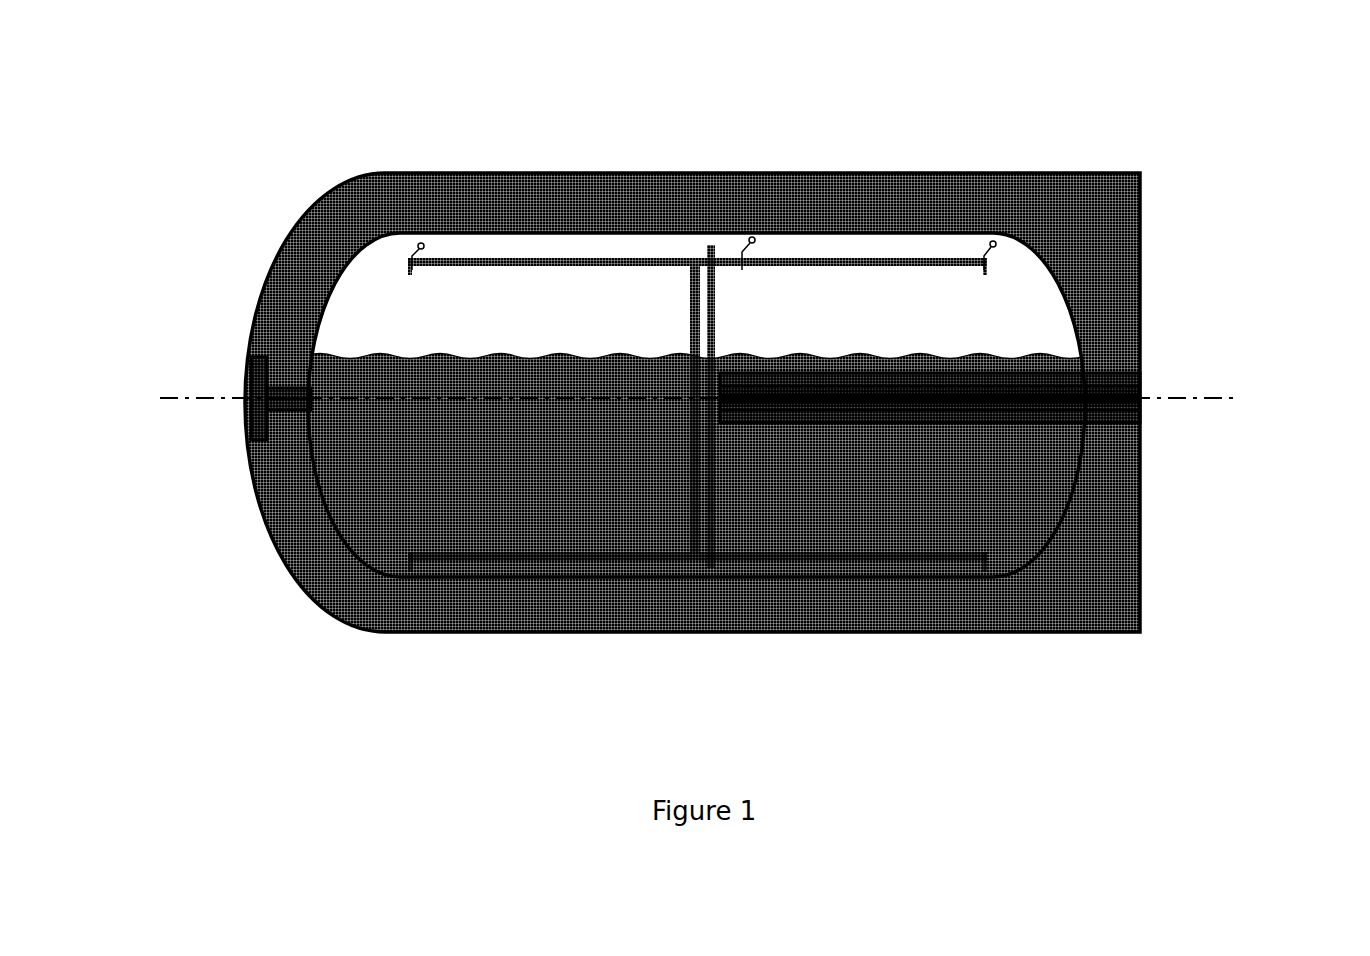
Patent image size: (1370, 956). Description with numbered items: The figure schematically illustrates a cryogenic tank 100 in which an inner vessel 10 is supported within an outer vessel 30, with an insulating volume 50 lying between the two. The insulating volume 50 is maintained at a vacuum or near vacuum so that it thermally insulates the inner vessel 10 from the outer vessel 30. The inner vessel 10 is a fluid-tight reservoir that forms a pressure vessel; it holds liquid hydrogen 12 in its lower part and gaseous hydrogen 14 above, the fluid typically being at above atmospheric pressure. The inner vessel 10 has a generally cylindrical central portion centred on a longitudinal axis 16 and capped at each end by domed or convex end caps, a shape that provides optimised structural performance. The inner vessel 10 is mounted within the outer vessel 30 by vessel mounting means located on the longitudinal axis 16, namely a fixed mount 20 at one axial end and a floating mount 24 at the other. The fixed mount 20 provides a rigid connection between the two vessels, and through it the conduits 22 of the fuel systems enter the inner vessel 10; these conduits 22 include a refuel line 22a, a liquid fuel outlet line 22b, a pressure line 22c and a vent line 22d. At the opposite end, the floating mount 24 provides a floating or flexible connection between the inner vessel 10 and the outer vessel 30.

The tank 100 is at (753, 378).
The inner vessel 10 is at (810, 580).
The liquid hydrogen 12 is at (512, 480).
The gaseous hydrogen 14 is at (499, 335).
The longitudinal axis 16 is at (243, 398).
The fixed mount 20 is at (878, 405).
The conduits 22 is at (1034, 402).
The refuel line 22a is at (1142, 412).
The liquid fuel outlet line 22b is at (1142, 404).
The pressure line 22c is at (1142, 396).
The vent line 22d is at (1142, 390).
The floating mount 24 is at (285, 385).
The outer vessel 30 is at (620, 173).
The insulating volume 50 is at (747, 610).